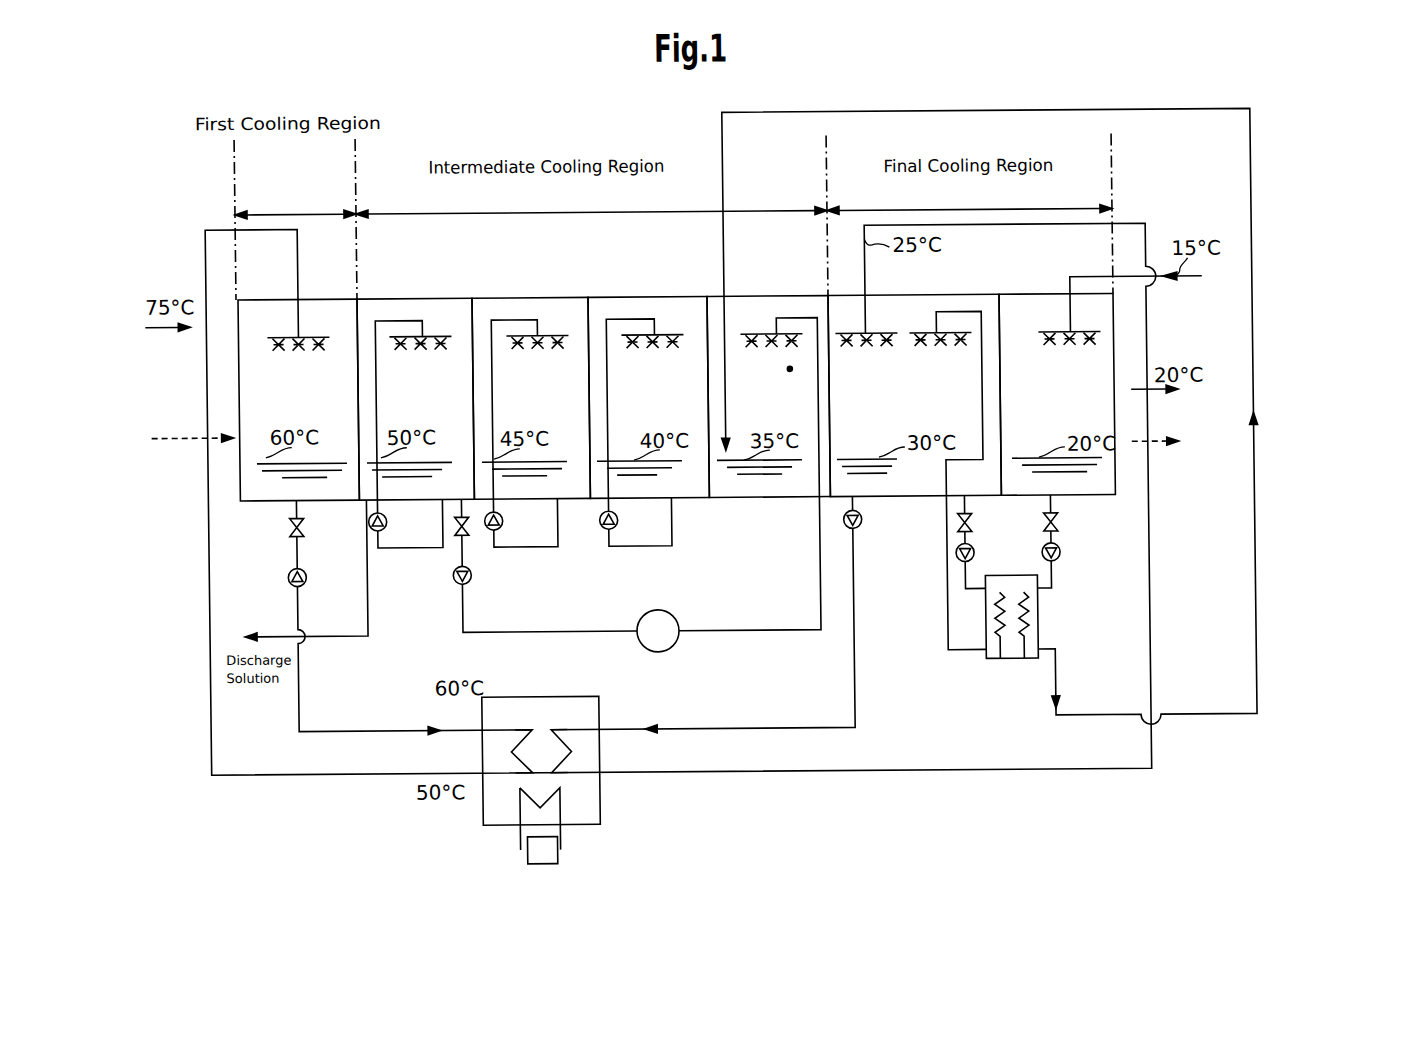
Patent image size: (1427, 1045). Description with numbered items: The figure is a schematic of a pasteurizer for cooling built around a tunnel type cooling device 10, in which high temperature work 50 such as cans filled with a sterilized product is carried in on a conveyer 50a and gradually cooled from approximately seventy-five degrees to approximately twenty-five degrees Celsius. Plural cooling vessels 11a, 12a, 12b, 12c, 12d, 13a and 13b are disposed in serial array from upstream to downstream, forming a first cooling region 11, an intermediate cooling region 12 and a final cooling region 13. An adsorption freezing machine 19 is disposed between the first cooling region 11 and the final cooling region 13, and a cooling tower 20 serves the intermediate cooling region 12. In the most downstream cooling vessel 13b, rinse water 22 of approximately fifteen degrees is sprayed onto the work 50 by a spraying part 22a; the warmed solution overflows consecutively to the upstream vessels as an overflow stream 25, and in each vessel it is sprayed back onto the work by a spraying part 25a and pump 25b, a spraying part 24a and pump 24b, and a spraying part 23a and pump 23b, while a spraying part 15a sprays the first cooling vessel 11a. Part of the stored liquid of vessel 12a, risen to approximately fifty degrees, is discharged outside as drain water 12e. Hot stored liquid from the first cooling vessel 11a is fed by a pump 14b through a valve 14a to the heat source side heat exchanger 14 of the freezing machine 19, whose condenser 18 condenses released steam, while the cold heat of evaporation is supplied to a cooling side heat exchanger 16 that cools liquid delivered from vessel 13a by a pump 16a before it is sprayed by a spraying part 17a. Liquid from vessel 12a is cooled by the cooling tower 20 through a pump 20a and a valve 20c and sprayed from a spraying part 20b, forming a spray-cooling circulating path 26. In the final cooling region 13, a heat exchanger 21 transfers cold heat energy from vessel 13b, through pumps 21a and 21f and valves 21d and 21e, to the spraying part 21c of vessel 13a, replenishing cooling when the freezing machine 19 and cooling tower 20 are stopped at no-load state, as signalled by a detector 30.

The tunnel type cooling device 10 is at (1168, 210).
The first cooling region 11 is at (295, 216).
The first cooling vessel 11a is at (302, 299).
The intermediate cooling region 12 is at (591, 218).
The cooling vessel 12a is at (409, 300).
The cooling vessel 12b is at (534, 288).
The cooling vessel 12c is at (650, 289).
The cooling vessel 12d is at (766, 290).
The discharge pipe 12e is at (347, 640).
The final cooling region 13 is at (969, 214).
The upstream side cooling vessel 13a is at (916, 291).
The most downstream cooling vessel 13b is at (1031, 292).
The heat source side heat exchanger 14 is at (514, 732).
The valve 14a is at (286, 529).
The pump 14b is at (284, 578).
The spray nozzle 15a is at (310, 341).
The cooling side heat exchanger 16 is at (550, 738).
The pump 16a is at (858, 530).
The spraying part 17a is at (882, 338).
The condenser 18 is at (551, 858).
The adsorption freezing machine 19 is at (583, 696).
The cooling tower 20 is at (669, 612).
The pump 20a is at (452, 580).
The spraying part 20b is at (760, 336).
The valve 20c is at (466, 536).
The heat exchanger 21 is at (982, 665).
The pump 21a is at (1058, 559).
The spraying part 21c is at (960, 340).
The valve 21d is at (1058, 529).
The valve 21e is at (954, 529).
The pump 21f is at (952, 559).
The rinse water 22 is at (1192, 284).
The spraying part 22a is at (1059, 344).
The spraying part 23a is at (420, 342).
The pump 23b is at (384, 517).
The spraying part 24a is at (538, 343).
The pump 24b is at (500, 517).
The overflow stream 25 is at (472, 493).
The spraying part 25a is at (656, 344).
The pump 25b is at (615, 517).
The spray-cooling circulating path 26 is at (745, 644).
The temperature sensor 30 is at (812, 359).
The work 50 is at (134, 344).
The conveyer 50a is at (188, 424).